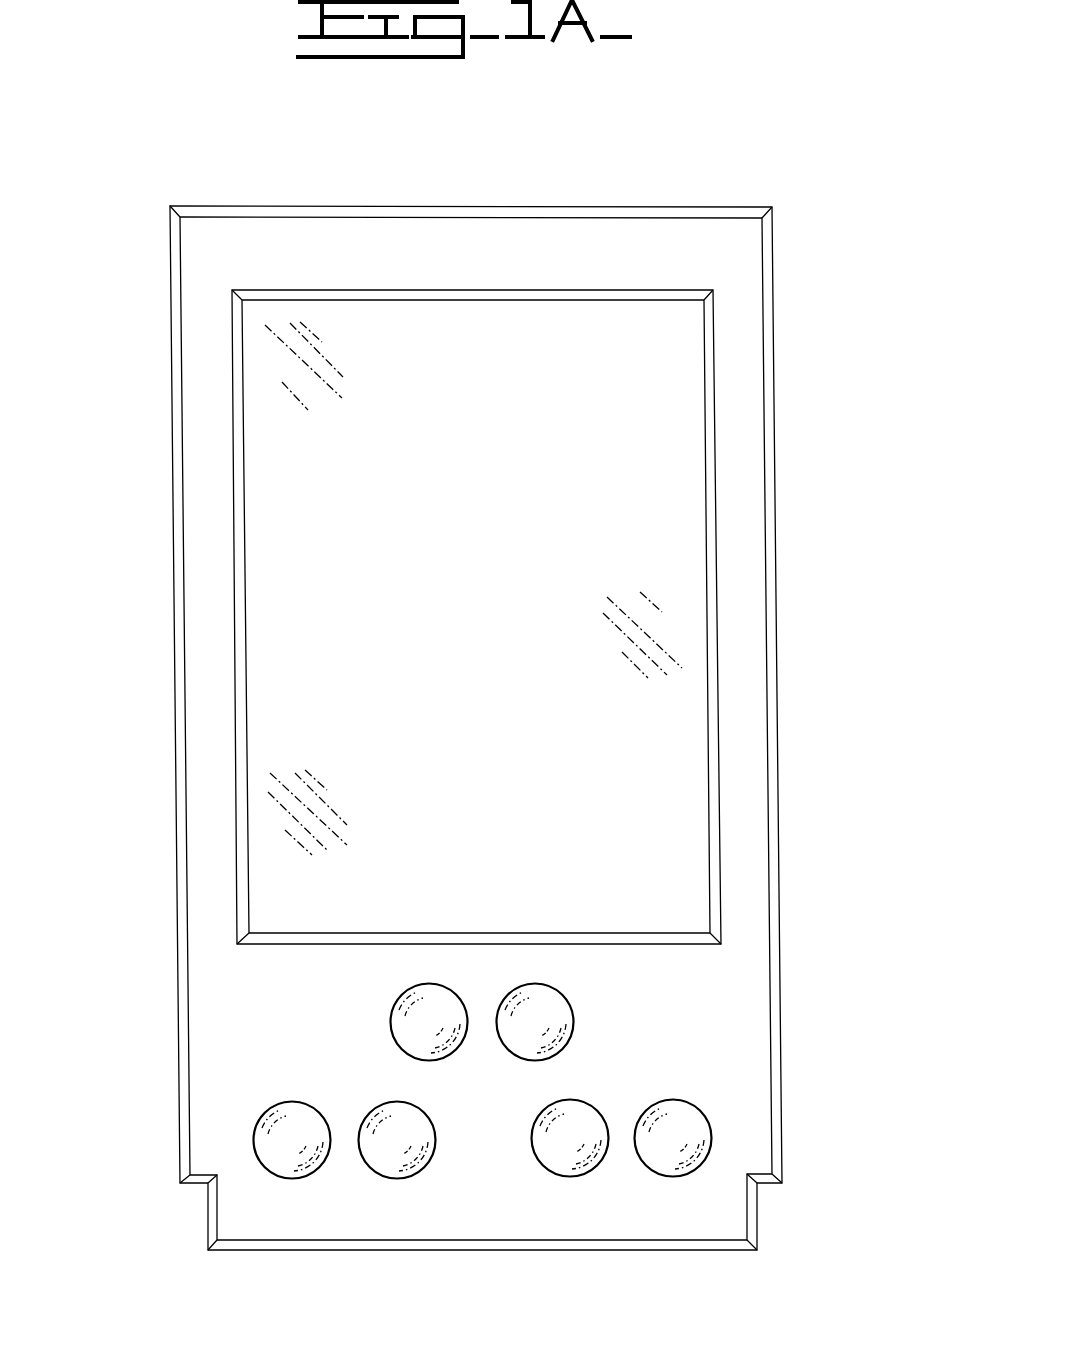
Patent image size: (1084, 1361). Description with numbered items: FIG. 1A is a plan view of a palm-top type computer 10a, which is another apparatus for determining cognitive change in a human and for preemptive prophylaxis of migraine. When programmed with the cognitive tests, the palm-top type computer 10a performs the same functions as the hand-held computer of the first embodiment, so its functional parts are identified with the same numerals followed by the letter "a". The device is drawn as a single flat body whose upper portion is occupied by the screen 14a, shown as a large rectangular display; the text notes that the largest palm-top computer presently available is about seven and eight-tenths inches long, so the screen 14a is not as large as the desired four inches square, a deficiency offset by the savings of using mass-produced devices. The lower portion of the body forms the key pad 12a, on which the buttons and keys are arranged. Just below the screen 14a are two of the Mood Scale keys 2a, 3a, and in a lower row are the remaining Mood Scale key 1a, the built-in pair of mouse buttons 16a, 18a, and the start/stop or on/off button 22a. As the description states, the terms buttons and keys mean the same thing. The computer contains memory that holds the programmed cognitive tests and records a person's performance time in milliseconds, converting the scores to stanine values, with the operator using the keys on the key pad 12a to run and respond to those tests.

The palm-top type computer 10a is at (488, 686).
The key pad 12a is at (670, 1058).
The screen 14a is at (492, 545).
The Mood Scale key 1a is at (397, 1177).
The Mood Scale key 2a is at (429, 983).
The Mood Scale key 3a is at (535, 983).
The mouse button 16a is at (570, 1176).
The mouse button 18a is at (673, 1176).
The start/stop or on/off button 22a is at (262, 1115).